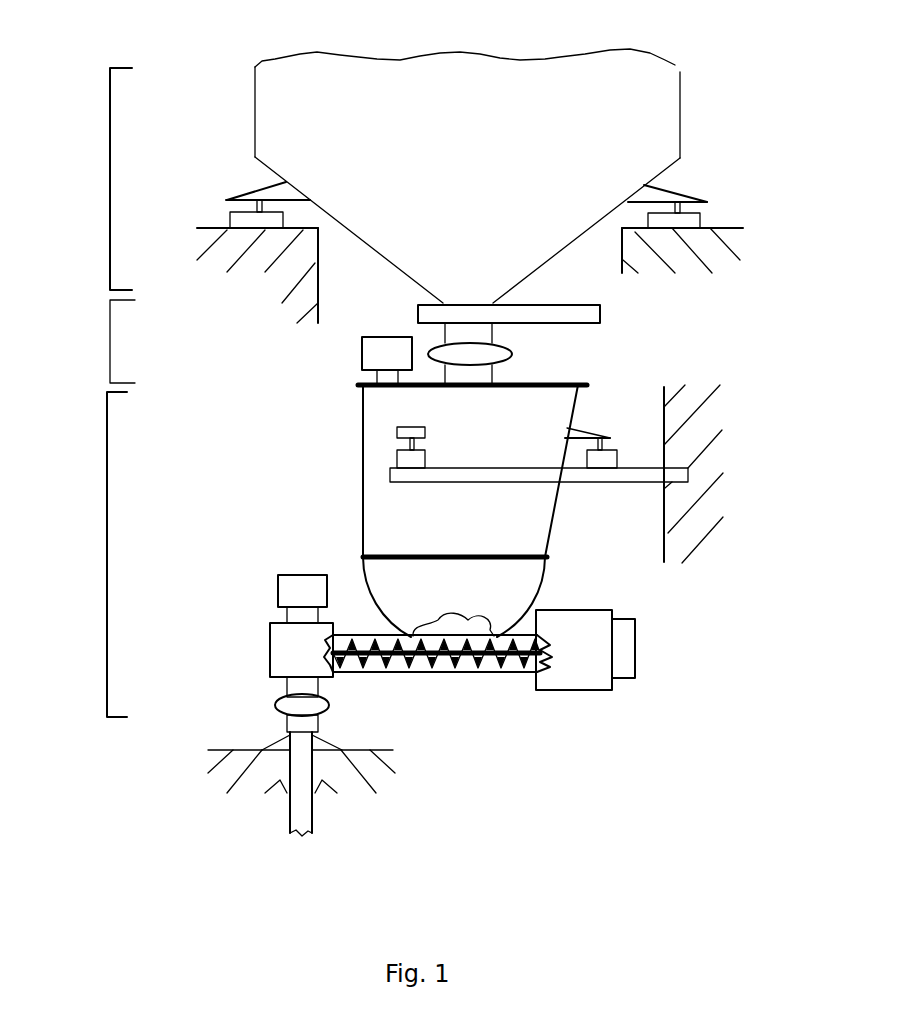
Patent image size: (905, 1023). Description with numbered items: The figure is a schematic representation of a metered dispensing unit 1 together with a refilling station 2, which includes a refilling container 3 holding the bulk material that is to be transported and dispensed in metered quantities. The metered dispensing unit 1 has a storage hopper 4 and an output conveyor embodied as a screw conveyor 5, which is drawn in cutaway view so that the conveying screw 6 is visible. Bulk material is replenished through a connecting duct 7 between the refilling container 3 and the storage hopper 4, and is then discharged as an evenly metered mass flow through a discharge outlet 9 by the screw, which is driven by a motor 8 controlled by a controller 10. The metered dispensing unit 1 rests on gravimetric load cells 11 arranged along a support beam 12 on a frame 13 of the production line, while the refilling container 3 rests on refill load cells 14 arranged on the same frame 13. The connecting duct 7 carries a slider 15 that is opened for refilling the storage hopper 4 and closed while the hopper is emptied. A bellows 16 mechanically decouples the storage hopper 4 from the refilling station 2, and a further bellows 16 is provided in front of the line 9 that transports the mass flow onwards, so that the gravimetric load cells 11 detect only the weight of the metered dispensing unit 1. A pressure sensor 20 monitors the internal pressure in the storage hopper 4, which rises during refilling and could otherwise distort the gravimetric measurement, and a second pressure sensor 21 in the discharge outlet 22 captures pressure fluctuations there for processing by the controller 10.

The metered dispensing unit 1 is at (107, 555).
The refilling station 2 is at (110, 180).
The refilling container 3 is at (258, 123).
The storage hopper 4 is at (360, 463).
The screw conveyor housing 5 is at (443, 673).
The conveying screw 6 is at (490, 673).
The connecting duct 7 is at (110, 343).
The motor 8 is at (576, 668).
The discharge outlet 9 is at (290, 815).
The controller 10 is at (637, 655).
The gravimetric load cell 11 is at (410, 458).
The support beam 12 is at (495, 475).
The frame 13 is at (213, 227).
The refill load cells 14 is at (253, 218).
The slider 15 is at (532, 313).
The bellows 16 is at (500, 353).
The pressure sensor 20 is at (373, 352).
The pressure sensor 21 is at (293, 590).
The discharge outlet 22 is at (225, 675).